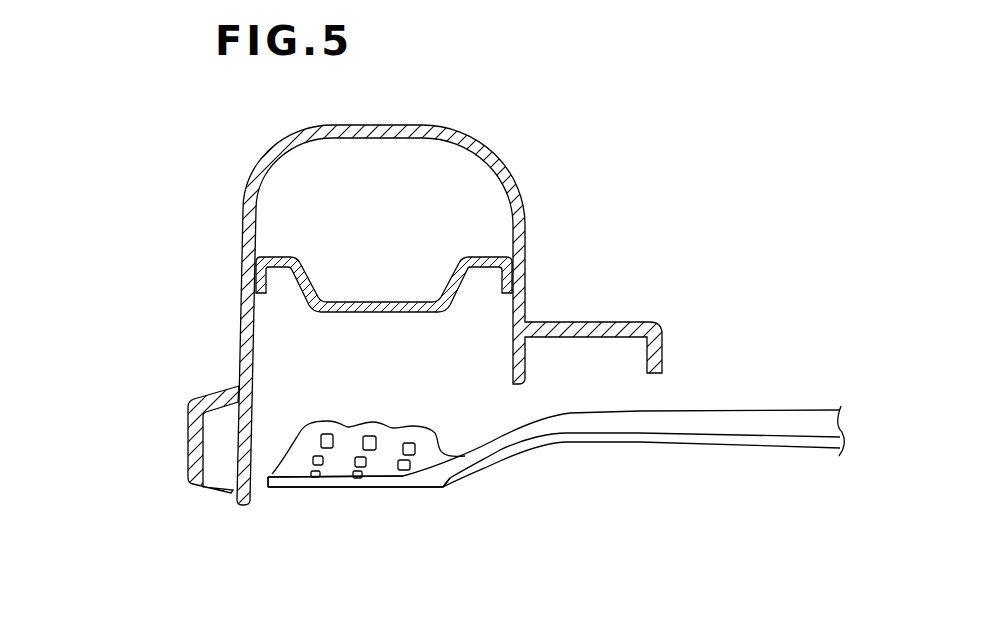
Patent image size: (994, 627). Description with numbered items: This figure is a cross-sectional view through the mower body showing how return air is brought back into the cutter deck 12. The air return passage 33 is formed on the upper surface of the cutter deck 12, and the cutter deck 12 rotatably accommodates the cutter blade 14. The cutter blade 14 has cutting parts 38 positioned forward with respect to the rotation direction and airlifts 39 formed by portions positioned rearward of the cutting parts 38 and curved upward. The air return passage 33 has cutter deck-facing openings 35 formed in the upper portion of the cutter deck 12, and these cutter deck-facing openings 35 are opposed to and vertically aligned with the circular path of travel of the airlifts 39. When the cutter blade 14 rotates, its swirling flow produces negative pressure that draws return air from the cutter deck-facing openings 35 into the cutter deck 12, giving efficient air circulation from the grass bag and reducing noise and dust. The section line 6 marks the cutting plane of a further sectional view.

The terminal cover assembly 12 is at (366, 292).
The bus bar plate 14 is at (679, 392).
The cover body 33 is at (449, 200).
The partition plate 35 is at (450, 262).
The bottom plate portion 38 is at (336, 487).
The perforated raised portion 39 is at (388, 421).
The section line 6- 6 is at (385, 246).